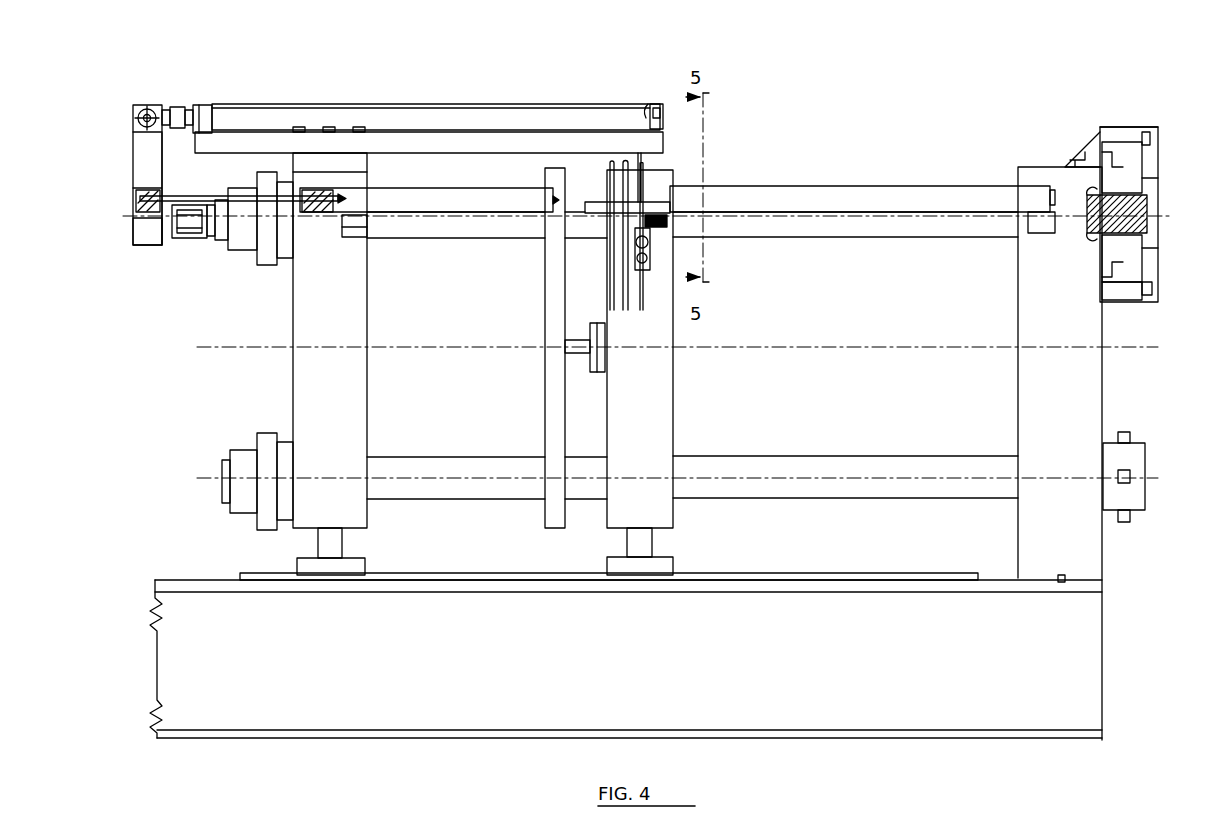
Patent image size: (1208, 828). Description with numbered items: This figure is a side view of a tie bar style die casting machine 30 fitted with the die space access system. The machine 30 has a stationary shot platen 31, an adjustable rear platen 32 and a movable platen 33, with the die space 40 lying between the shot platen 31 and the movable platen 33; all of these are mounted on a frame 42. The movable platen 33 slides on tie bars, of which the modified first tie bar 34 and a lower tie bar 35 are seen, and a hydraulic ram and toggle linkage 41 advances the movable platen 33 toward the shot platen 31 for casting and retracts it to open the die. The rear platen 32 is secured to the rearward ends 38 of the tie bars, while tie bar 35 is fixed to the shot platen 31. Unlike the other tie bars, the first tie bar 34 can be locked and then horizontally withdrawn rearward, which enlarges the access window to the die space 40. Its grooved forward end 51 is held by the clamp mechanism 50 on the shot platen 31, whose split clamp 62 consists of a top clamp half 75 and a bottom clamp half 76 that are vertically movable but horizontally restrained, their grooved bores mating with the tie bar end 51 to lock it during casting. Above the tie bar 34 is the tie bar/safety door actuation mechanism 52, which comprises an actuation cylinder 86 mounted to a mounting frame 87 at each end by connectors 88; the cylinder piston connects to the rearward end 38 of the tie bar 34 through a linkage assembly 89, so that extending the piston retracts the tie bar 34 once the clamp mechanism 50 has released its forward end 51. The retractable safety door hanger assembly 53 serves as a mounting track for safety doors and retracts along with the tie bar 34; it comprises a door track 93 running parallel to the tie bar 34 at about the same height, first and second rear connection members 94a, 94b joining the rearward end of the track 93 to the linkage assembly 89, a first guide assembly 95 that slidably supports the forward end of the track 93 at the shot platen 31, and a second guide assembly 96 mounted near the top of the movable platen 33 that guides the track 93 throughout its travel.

The die casting machine 30 is at (136, 675).
The stationary shot platen 31 is at (1035, 417).
The adjustable rear platen 32 is at (355, 415).
The movable platen 33 is at (653, 417).
The first tie bar 34 is at (737, 228).
The tie bar 35 is at (885, 487).
The rearward end of the tie bar 38 is at (276, 280).
The die space 40 is at (786, 560).
The hydraulic ram and toggle linkage 41 is at (579, 396).
The frame 42 is at (170, 577).
The clamp mechanism 50 is at (1120, 112).
The forward end of the tie bar 51 is at (1132, 300).
The tie bar/safety door actuation mechanism 52 is at (242, 88).
The retractable safety door hanger assembly 53 is at (176, 176).
The split clamp 62 is at (1155, 155).
The top clamp half 75 is at (1132, 190).
The bottom clamp half 76 is at (1135, 255).
The actuation cylinder 86 is at (458, 118).
The mounting frame 87 is at (385, 148).
The connectors 88 is at (220, 102).
The linkage assembly 89 is at (118, 167).
The door track 93 is at (478, 202).
The first rear connection member 94a is at (205, 193).
The second rear connection member 94b is at (132, 205).
The first guide assembly 95 is at (1043, 228).
The second guide assembly 96 is at (587, 240).